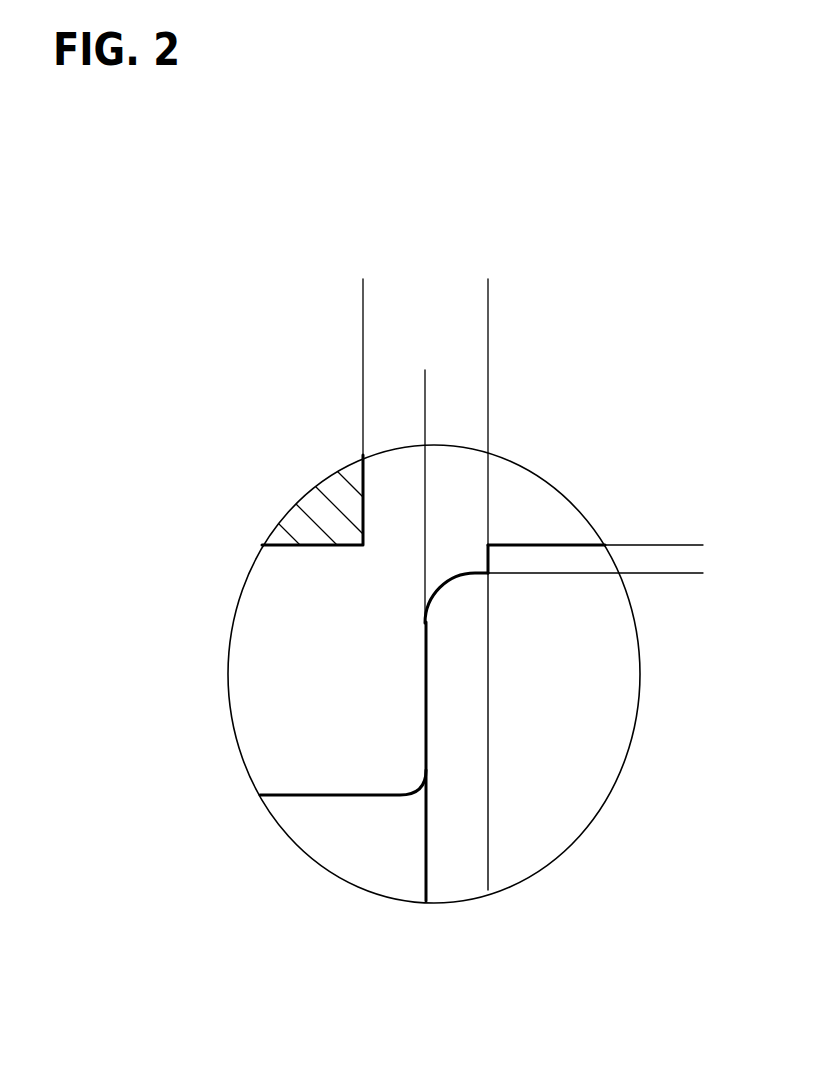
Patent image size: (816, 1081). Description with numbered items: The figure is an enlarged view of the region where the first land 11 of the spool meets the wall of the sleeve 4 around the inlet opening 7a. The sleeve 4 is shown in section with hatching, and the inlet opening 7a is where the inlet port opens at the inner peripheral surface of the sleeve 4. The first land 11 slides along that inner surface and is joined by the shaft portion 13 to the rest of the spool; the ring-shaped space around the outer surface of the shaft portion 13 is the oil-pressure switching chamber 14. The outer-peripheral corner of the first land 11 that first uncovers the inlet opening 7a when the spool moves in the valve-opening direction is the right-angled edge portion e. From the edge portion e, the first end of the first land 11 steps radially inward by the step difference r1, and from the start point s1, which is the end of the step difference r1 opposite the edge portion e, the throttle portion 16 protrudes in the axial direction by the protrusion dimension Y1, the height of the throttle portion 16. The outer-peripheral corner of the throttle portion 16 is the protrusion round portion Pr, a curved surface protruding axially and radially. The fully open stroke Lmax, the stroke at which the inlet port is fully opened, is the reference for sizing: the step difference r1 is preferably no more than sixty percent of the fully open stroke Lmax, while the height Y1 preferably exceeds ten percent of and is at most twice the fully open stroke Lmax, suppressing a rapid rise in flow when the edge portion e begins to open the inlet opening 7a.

The sleeve 4 is at (300, 518).
The inlet opening 7a is at (453, 545).
The first land 11 is at (553, 838).
The shaft portion 13 is at (345, 840).
The oil-pressure switching chamber 14 is at (325, 641).
The throttle portion 16 is at (445, 695).
The edge portion e is at (488, 545).
The start point s1 is at (488, 573).
The protrusion round portion Pr is at (442, 588).
The fully open stroke Lmax is at (577, 279).
The protrusion dimension Y1 is at (555, 370).
The step difference r1 is at (693, 483).